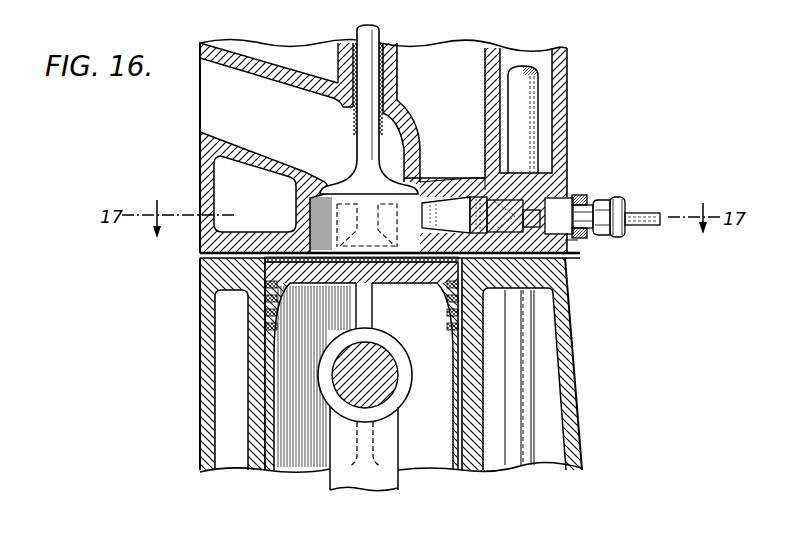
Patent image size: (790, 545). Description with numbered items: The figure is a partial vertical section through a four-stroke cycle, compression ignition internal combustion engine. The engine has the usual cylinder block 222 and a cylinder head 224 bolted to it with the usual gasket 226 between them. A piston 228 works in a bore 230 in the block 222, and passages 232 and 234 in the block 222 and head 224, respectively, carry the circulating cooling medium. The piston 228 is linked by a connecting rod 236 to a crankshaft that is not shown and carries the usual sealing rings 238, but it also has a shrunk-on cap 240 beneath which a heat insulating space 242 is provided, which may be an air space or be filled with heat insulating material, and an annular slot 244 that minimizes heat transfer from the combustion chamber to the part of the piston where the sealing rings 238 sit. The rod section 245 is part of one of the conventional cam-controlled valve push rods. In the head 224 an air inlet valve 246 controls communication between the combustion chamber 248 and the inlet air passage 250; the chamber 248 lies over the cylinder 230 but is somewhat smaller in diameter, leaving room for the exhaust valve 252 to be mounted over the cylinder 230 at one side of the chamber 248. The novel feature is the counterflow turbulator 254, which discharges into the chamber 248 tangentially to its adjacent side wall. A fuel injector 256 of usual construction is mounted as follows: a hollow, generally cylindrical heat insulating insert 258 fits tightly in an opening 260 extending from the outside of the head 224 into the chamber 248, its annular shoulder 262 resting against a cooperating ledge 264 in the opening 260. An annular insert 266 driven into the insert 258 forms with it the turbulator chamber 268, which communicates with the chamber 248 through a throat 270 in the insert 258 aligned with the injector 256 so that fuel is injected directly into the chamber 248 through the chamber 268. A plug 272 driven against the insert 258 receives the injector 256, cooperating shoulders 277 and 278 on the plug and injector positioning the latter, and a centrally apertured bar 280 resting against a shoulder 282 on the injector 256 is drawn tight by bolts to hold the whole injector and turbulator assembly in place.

The cylinder block 222 is at (567, 283).
The cylinder head 224 is at (207, 182).
The gasket 226 is at (265, 257).
The piston 228 is at (250, 330).
The bore 230 is at (258, 389).
The passage 232 is at (235, 305).
The passage 234 is at (230, 166).
The connecting rod 236 is at (348, 462).
The sealing rings 238 is at (487, 302).
The shrunk-on cap 240 is at (258, 273).
The heat insulating space 242 is at (431, 278).
The annular slot 244 is at (442, 328).
The rod section 245 is at (522, 385).
The air inlet valve 246 is at (372, 168).
The combustion chamber 248 is at (430, 172).
The inlet air passage 250 is at (225, 100).
The exhaust valve 252 is at (298, 213).
The counterflow turbulator 254 is at (515, 170).
The fuel injector 256 is at (620, 193).
The heat insulating insert 258 is at (478, 194).
The opening 260 is at (444, 182).
The annular shoulder 262 is at (565, 258).
The ledge 264 is at (436, 303).
The annular insert 266 is at (537, 176).
The turbulator chamber 268 is at (447, 215).
The throat 270 is at (426, 220).
The plug 272 is at (567, 200).
The shoulder 277 is at (580, 246).
The shoulder 278 is at (570, 210).
The bar 280 is at (592, 200).
The shoulder 282 is at (598, 208).